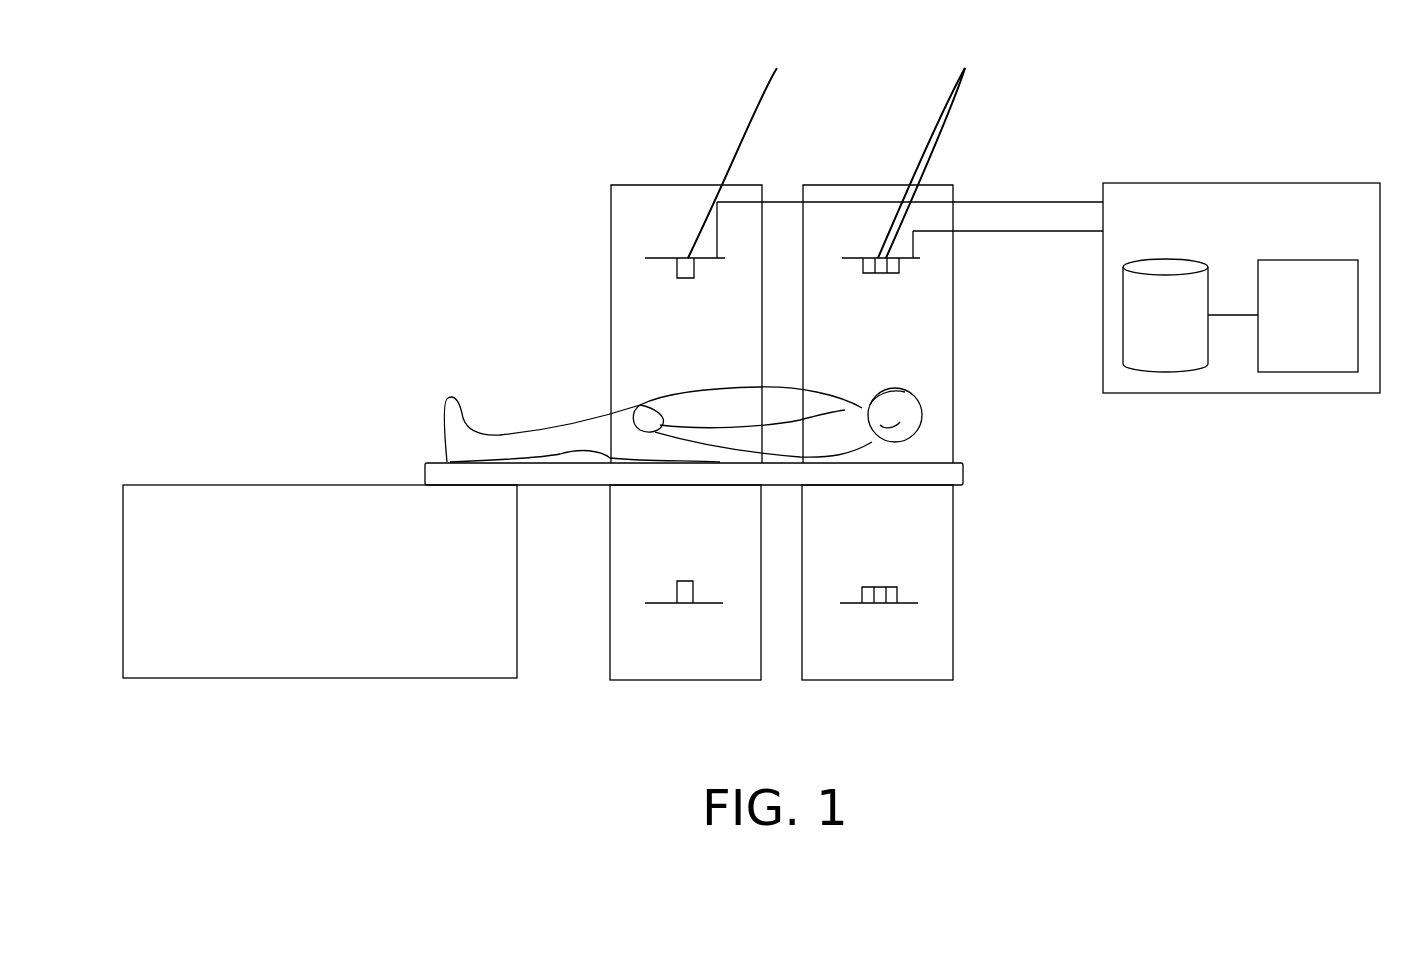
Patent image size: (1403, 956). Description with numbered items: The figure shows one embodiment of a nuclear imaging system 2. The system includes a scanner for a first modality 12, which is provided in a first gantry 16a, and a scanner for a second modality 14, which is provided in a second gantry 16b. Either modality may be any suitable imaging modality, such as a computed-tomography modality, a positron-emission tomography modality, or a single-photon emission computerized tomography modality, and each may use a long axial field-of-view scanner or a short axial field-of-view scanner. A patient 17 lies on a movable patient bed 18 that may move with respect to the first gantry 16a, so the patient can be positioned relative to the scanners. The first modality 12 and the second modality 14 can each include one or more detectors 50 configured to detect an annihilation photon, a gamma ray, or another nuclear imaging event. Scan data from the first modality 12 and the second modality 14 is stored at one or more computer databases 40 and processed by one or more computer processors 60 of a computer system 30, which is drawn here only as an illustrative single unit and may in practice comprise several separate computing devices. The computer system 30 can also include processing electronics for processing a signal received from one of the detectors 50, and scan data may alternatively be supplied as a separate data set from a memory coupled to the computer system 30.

The nuclear imaging system 2 is at (340, 256).
The first modality 12 is at (655, 258).
The second modality 14 is at (899, 265).
The first gantry 16a is at (685, 182).
The second gantry 16b is at (878, 182).
The patient 17 is at (577, 420).
The movable patient bed 18 is at (427, 462).
The computer system 30 is at (1135, 183).
The computer databases 40 is at (1149, 353).
The detectors 50 is at (837, 150).
The computer processors 60 is at (1298, 337).